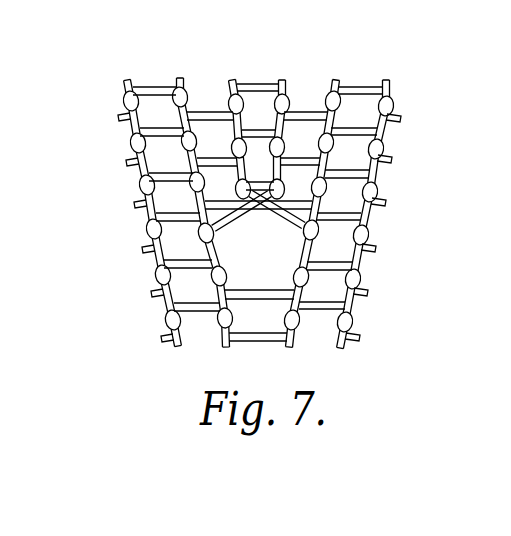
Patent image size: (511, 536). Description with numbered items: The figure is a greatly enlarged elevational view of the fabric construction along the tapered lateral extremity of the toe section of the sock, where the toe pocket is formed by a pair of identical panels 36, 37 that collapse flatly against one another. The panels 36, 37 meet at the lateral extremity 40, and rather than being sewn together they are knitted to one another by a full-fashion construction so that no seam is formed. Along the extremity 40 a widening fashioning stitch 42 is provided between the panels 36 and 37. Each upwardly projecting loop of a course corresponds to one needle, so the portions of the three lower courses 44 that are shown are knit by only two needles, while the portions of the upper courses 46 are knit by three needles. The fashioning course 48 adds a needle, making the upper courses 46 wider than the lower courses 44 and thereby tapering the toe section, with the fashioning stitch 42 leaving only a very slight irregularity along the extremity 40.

The lateral extremity 40 is at (252, 85).
The widening fashioning stitch 42 is at (275, 221).
The panel 36 is at (125, 216).
The panel 37 is at (395, 202).
The lower courses 44 is at (373, 292).
The upper courses 46 is at (402, 113).
The fashioning course 48 is at (377, 248).